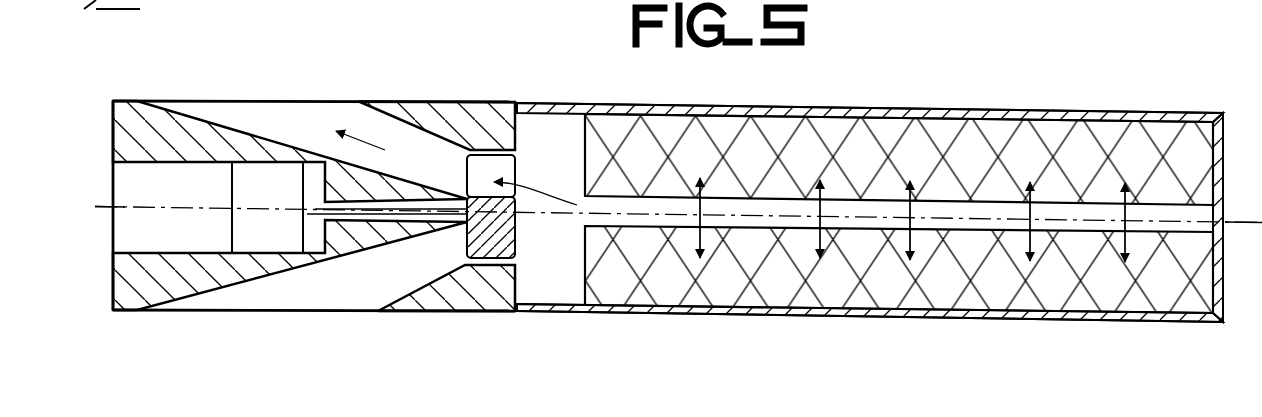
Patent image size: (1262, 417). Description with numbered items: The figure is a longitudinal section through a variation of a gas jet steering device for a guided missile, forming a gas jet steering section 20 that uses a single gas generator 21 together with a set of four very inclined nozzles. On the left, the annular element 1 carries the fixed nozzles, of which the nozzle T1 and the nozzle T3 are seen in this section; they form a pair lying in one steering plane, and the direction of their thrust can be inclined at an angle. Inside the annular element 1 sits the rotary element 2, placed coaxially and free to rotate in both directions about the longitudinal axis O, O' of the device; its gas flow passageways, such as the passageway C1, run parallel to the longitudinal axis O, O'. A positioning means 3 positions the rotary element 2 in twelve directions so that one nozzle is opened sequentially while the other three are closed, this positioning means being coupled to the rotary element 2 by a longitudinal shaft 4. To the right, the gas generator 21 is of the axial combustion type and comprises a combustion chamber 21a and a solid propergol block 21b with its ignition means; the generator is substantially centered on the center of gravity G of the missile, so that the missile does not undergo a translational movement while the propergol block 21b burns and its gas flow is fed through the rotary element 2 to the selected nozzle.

The annular element 1 is at (468, 113).
The rotary element 2 is at (482, 240).
The positioning means 3 is at (262, 243).
The longitudinal shaft 4 is at (408, 210).
The gas jet steering section 20 is at (720, 84).
The gas generator 21 is at (978, 112).
The combustion chamber 21a is at (1015, 303).
The solid propergol block 21b is at (557, 297).
The fixed nozzle T1 is at (302, 110).
The fixed nozzle T3 is at (337, 309).
The gas flow passageway C1 is at (504, 167).
The center of gravity G is at (901, 209).
The longitudinal axis O is at (1243, 209).
The longitudinal axis O' is at (104, 190).